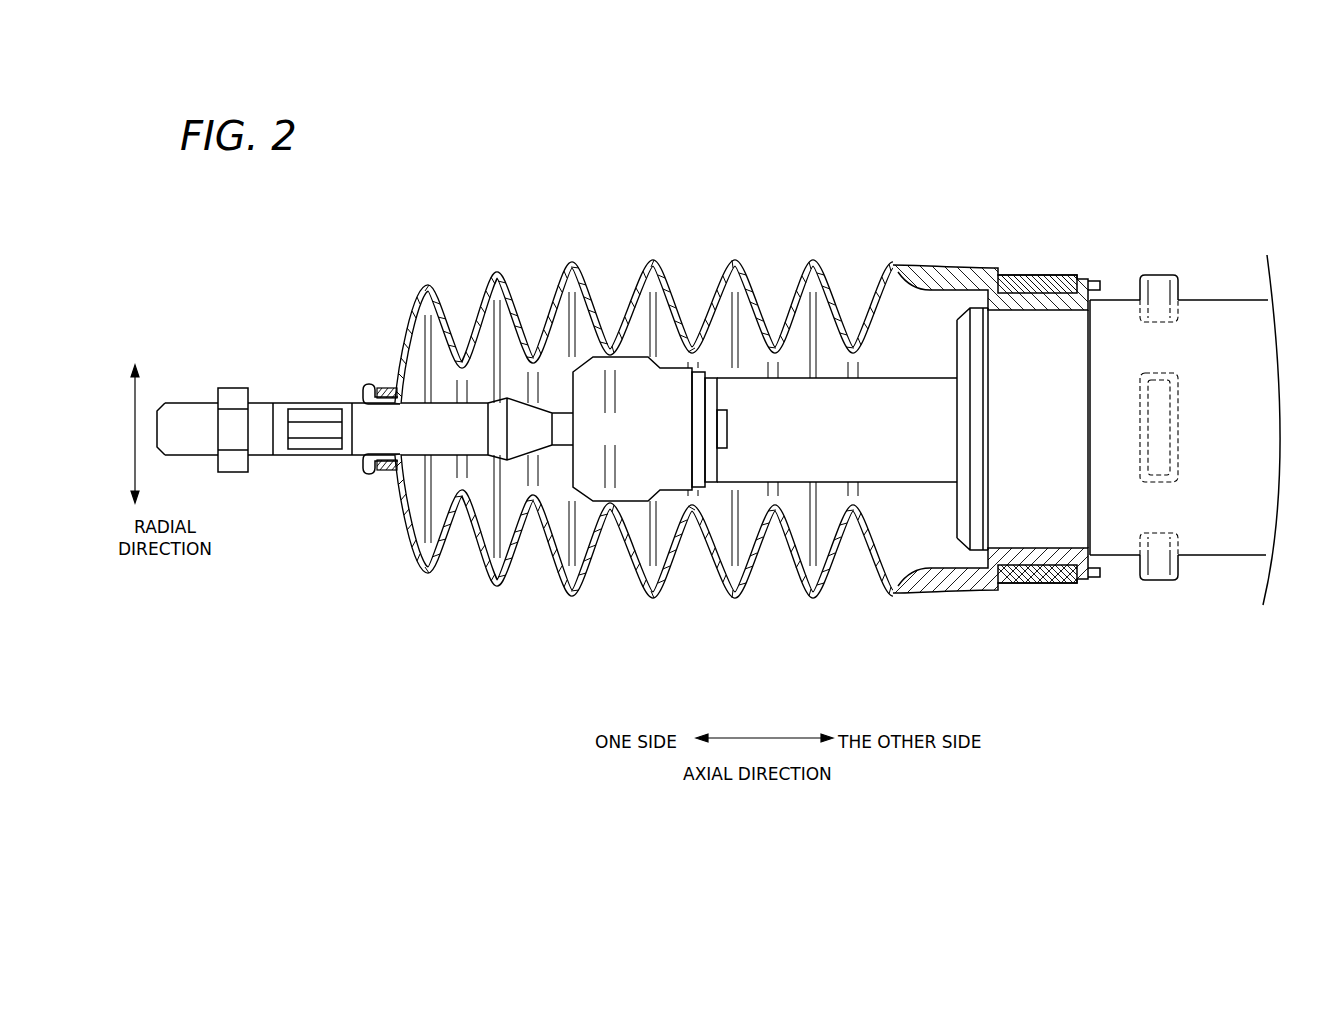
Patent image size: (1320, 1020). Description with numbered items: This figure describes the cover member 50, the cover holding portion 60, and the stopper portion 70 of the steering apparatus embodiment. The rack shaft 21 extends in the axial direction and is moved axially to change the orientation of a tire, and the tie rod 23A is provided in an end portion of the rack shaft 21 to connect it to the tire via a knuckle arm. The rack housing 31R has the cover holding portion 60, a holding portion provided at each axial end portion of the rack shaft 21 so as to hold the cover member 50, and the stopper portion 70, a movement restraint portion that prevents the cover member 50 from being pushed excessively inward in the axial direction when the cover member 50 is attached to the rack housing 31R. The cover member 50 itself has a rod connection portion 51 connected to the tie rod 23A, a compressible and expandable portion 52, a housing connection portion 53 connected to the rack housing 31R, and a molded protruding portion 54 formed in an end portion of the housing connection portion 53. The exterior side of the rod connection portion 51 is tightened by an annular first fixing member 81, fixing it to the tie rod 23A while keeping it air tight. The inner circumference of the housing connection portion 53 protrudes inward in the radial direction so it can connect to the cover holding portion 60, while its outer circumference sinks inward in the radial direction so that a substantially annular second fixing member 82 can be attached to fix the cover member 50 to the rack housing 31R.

The rack shaft 21 is at (895, 458).
The tie rod 23A is at (259, 400).
The rack housing 31R is at (1221, 285).
The cover member 50 is at (500, 650).
The rod connection portion 51 is at (364, 481).
The compressible and expandable portion 52 is at (678, 272).
The housing connection portion 53 is at (1044, 280).
The molded protruding portion 54 is at (1100, 284).
The cover holding portion 60 is at (1020, 528).
The stopper portion 70 is at (1158, 595).
The first fixing member 81 is at (390, 472).
The second fixing member 82 is at (1060, 584).